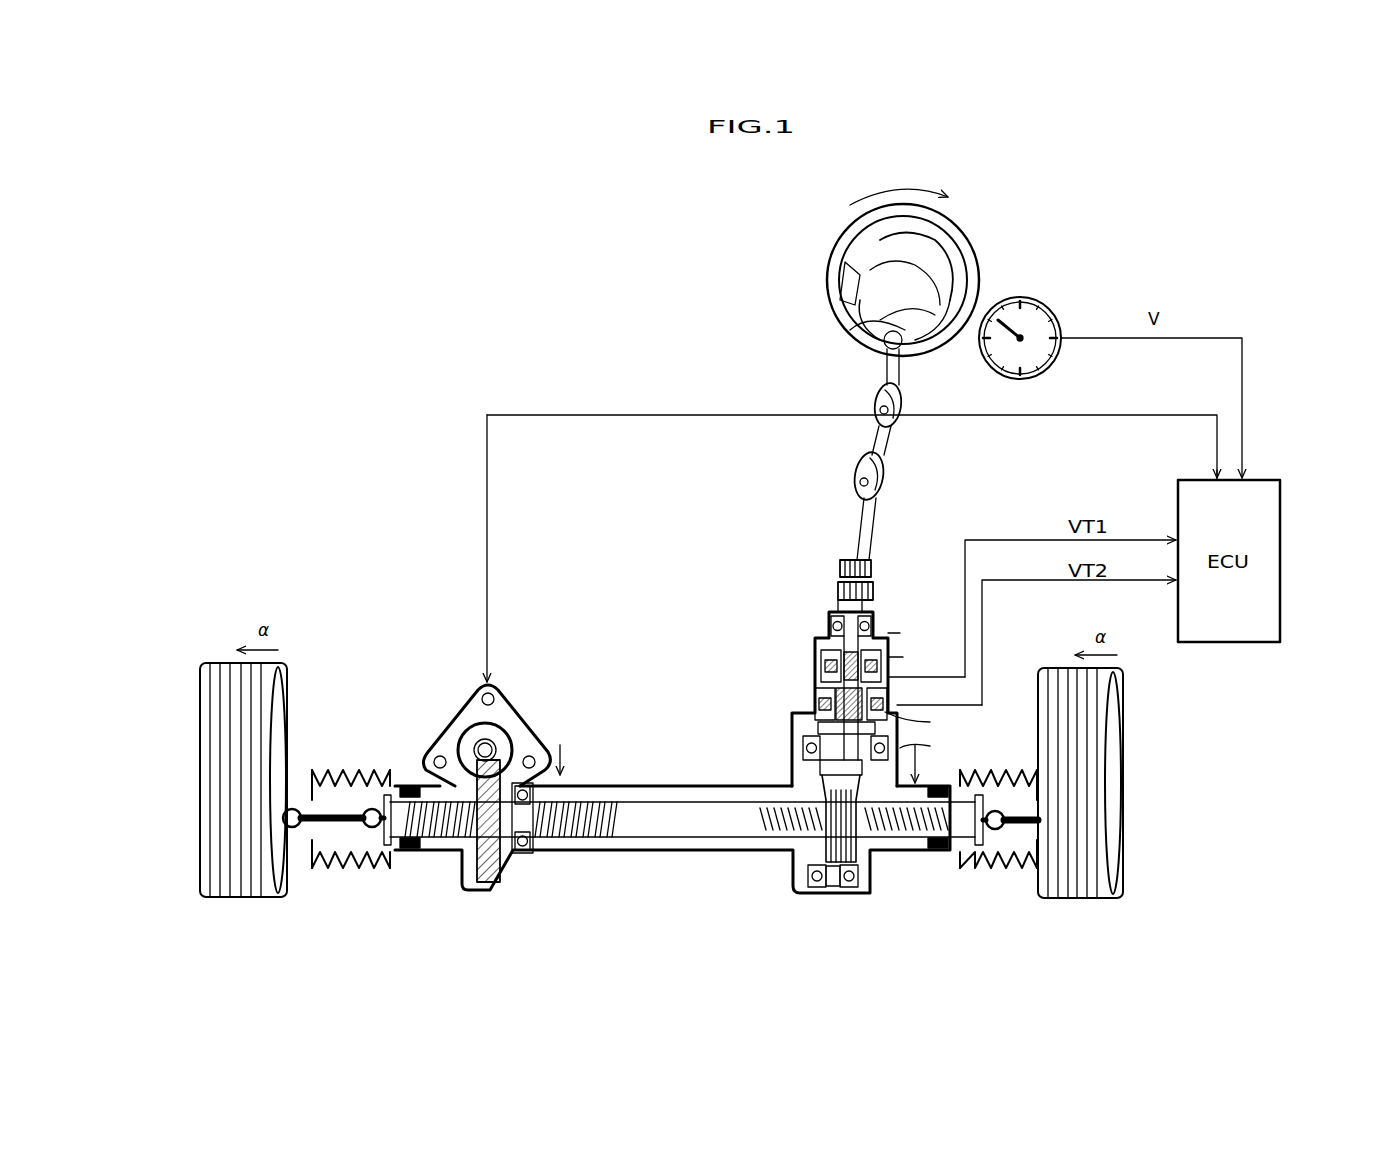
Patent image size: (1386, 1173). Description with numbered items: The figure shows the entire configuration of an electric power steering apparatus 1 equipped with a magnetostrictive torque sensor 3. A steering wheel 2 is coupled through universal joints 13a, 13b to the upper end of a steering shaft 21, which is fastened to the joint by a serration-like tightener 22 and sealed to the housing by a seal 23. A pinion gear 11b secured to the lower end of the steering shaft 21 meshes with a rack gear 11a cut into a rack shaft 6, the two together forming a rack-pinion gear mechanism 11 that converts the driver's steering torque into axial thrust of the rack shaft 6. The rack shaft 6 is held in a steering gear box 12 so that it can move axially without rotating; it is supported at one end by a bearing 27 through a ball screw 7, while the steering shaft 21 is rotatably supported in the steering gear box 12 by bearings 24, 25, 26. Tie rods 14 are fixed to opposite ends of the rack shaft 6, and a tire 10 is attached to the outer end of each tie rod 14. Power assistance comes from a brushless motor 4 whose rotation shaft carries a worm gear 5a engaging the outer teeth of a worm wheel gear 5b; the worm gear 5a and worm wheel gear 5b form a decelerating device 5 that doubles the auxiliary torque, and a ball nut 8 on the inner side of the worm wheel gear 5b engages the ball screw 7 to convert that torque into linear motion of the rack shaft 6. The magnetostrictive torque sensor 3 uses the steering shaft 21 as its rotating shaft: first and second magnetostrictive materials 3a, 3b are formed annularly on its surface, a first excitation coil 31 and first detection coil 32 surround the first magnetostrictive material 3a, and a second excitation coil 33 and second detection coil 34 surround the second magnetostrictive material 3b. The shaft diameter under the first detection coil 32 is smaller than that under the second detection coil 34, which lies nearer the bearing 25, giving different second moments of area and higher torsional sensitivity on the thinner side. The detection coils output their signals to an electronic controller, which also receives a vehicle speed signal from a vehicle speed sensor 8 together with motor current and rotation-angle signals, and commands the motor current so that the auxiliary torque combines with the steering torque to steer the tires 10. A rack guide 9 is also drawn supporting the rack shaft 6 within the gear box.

The electric power steering apparatus 1 is at (365, 280).
The steering wheel 2 is at (962, 230).
The magnetostrictive torque sensor 3 is at (745, 497).
The first magnetostrictive material 3a is at (846, 662).
The second magnetostrictive material 3b is at (846, 700).
The brushless motor 4 is at (440, 748).
The decelerating device 5 is at (262, 620).
The worm gear 5a is at (480, 748).
The worm wheel gear 5b is at (496, 742).
The rack shaft 6 is at (632, 838).
The ball screw 7 is at (592, 840).
The vehicle speed sensor 8 is at (1037, 298).
The rack guide 9 is at (796, 780).
The tire 10 is at (274, 896).
The rack-pinion gear mechanism 11 is at (1048, 903).
The rack gear 11a is at (878, 845).
The pinion gear 11b is at (852, 880).
The steering gear box 12 is at (742, 860).
The universal joint 13a is at (872, 392).
The universal joint 13b is at (882, 470).
The tie rod 14 is at (337, 826).
The steering shaft 21 is at (872, 563).
The tightener 22 is at (838, 588).
The seal 23 is at (876, 612).
The bearing 24 is at (878, 625).
The bearing 25 is at (806, 750).
The bearing 26 is at (802, 890).
The bearing 27 is at (530, 856).
The first excitation coil 31 is at (826, 656).
The first detection coil 32 is at (826, 670).
The second excitation coil 33 is at (820, 698).
The second detection coil 34 is at (820, 710).